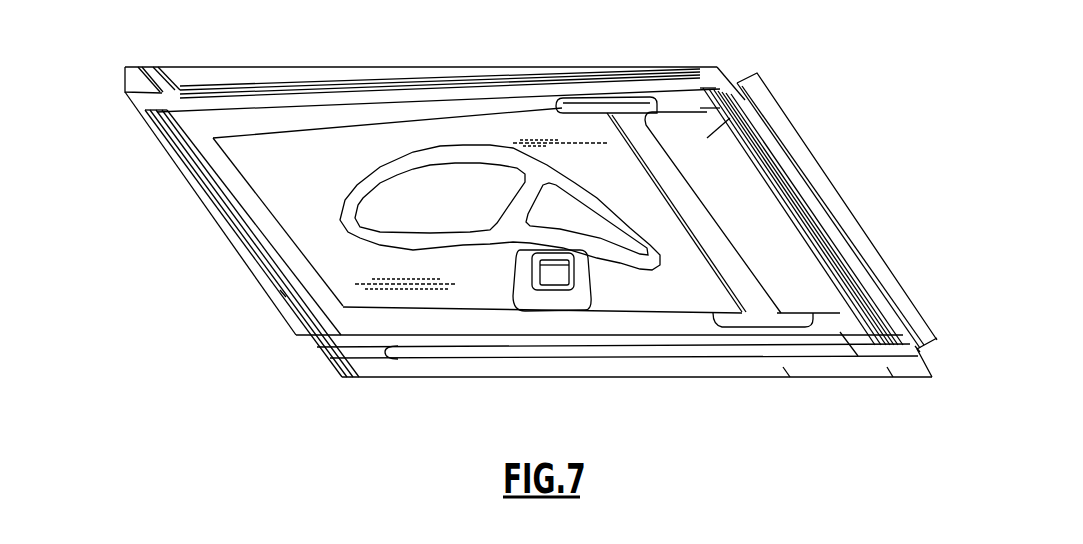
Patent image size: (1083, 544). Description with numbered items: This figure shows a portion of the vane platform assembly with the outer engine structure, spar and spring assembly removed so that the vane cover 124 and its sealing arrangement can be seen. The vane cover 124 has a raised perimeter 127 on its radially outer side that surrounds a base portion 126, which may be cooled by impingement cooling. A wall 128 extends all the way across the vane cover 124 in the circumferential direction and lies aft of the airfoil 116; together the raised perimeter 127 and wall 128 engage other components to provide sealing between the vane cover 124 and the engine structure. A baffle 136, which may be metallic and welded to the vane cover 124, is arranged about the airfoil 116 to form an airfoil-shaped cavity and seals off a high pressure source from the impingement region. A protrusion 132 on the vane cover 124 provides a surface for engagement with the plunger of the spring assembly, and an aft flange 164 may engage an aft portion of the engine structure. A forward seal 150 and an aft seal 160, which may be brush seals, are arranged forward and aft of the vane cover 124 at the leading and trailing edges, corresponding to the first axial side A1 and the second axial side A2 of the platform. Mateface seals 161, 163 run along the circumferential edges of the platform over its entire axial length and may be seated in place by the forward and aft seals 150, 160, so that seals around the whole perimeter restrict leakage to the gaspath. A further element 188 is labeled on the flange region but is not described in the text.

The airfoil 116 is at (485, 185).
The vane cover 124 is at (740, 97).
The base portion 126 is at (813, 297).
The raised perimeter 127 is at (840, 332).
The wall 128 is at (740, 283).
The protrusion 132 is at (552, 278).
The baffle 136 is at (433, 158).
The forward seal 150 is at (252, 255).
The aft seal 160 is at (887, 270).
The mateface seal 161 is at (152, 105).
The mateface seal 163 is at (388, 344).
The aft flange 164 is at (813, 237).
The flange band 188 is at (753, 194).
The first axial side A1 is at (284, 294).
The second axial side A2 is at (917, 348).